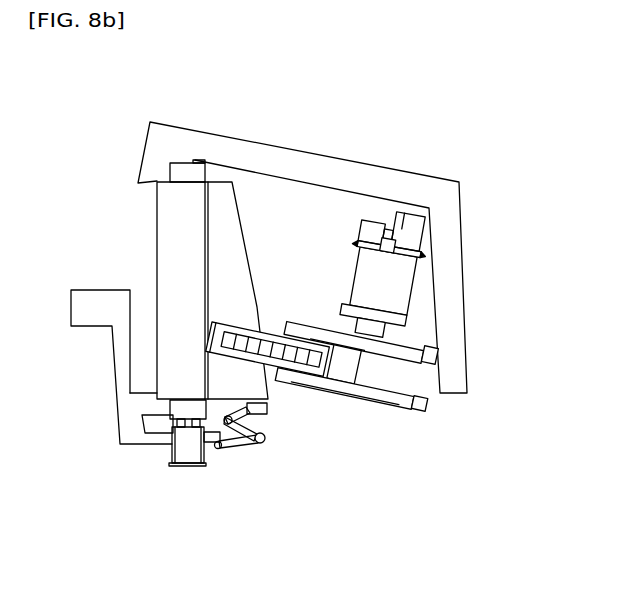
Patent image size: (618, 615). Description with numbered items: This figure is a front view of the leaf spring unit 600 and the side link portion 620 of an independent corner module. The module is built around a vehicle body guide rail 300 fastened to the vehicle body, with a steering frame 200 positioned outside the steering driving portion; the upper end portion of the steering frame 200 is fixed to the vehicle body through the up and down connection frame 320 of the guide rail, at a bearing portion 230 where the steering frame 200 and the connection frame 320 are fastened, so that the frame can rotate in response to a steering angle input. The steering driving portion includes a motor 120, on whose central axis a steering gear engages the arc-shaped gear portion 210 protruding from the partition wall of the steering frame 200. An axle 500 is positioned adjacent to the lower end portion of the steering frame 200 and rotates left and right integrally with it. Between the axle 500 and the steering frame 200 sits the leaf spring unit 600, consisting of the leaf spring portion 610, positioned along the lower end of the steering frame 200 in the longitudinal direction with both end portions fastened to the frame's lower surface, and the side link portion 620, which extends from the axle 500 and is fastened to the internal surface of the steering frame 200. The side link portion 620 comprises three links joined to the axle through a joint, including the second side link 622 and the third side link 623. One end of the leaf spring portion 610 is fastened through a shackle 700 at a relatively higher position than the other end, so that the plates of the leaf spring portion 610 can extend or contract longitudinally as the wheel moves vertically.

The motor 120 is at (424, 285).
The steering frame 200 is at (240, 250).
The gear portion 210 is at (268, 349).
The bearing portion 230 is at (185, 170).
The vehicle body guide rail 300 is at (356, 365).
The up and down connection frame 320 is at (367, 175).
The axle 500 is at (95, 303).
The leaf spring unit 600 is at (273, 504).
The leaf spring portion 610 is at (183, 455).
The side link portion 620 is at (296, 483).
The second side link 622 is at (264, 439).
The third side link 623 is at (250, 414).
The shackle 700 is at (175, 423).